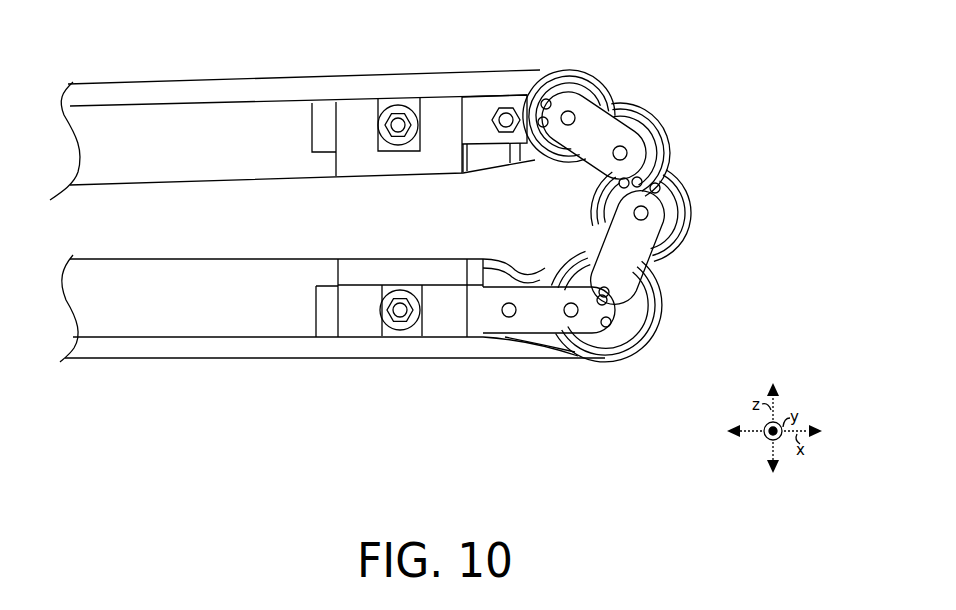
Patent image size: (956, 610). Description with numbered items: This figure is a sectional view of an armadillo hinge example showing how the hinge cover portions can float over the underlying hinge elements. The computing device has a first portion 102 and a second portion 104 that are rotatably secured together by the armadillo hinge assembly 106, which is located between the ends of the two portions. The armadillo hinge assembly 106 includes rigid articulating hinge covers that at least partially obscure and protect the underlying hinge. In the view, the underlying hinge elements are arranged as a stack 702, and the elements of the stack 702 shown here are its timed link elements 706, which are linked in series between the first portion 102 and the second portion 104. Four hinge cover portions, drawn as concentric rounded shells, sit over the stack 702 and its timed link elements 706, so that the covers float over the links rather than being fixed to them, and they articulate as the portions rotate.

The first portion 102 is at (203, 173).
The second portion 104 is at (215, 330).
The armadillo hinge assembly 106 is at (622, 58).
The stack 702 is at (568, 163).
The timed link element 706 is at (662, 122).